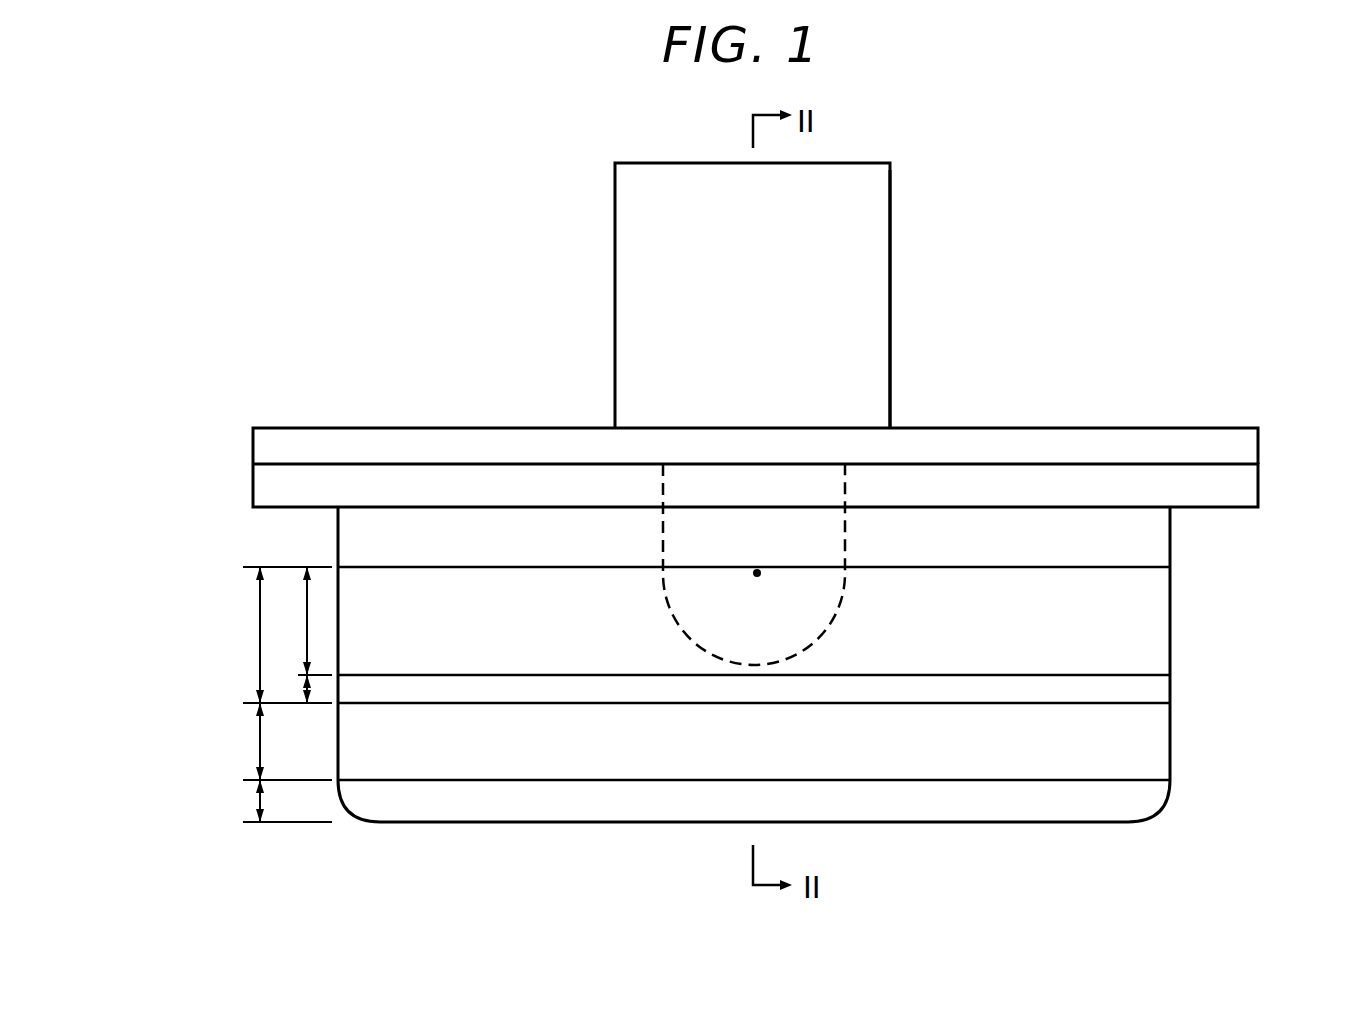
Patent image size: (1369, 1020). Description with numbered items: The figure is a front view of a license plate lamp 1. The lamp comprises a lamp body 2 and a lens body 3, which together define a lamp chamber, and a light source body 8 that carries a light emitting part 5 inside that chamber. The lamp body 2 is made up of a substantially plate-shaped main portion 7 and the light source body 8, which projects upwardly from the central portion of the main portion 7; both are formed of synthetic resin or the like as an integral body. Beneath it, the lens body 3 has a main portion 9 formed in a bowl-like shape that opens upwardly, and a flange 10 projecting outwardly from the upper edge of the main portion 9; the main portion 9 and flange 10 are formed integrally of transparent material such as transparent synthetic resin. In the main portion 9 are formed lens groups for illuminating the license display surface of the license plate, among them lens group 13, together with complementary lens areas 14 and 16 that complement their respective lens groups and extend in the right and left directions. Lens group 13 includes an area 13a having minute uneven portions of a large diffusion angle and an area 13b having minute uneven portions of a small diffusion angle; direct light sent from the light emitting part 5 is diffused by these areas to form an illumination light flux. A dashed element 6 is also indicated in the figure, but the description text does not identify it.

The license plate lamp 1 is at (1118, 292).
The lamp body 2 is at (891, 370).
The lens body 3 is at (1171, 635).
The light emitting part 5 is at (757, 573).
The internal cavity 6 is at (660, 543).
The main portion 7 is at (1091, 428).
The light source body 8 is at (891, 298).
The main portion 9 is at (1171, 590).
The flange 10 is at (1260, 490).
The lens group 13 is at (258, 620).
The area 13a is at (305, 598).
The area 13b is at (300, 690).
The complementary lens area 14 is at (258, 795).
The complementary lens area 16 is at (258, 740).